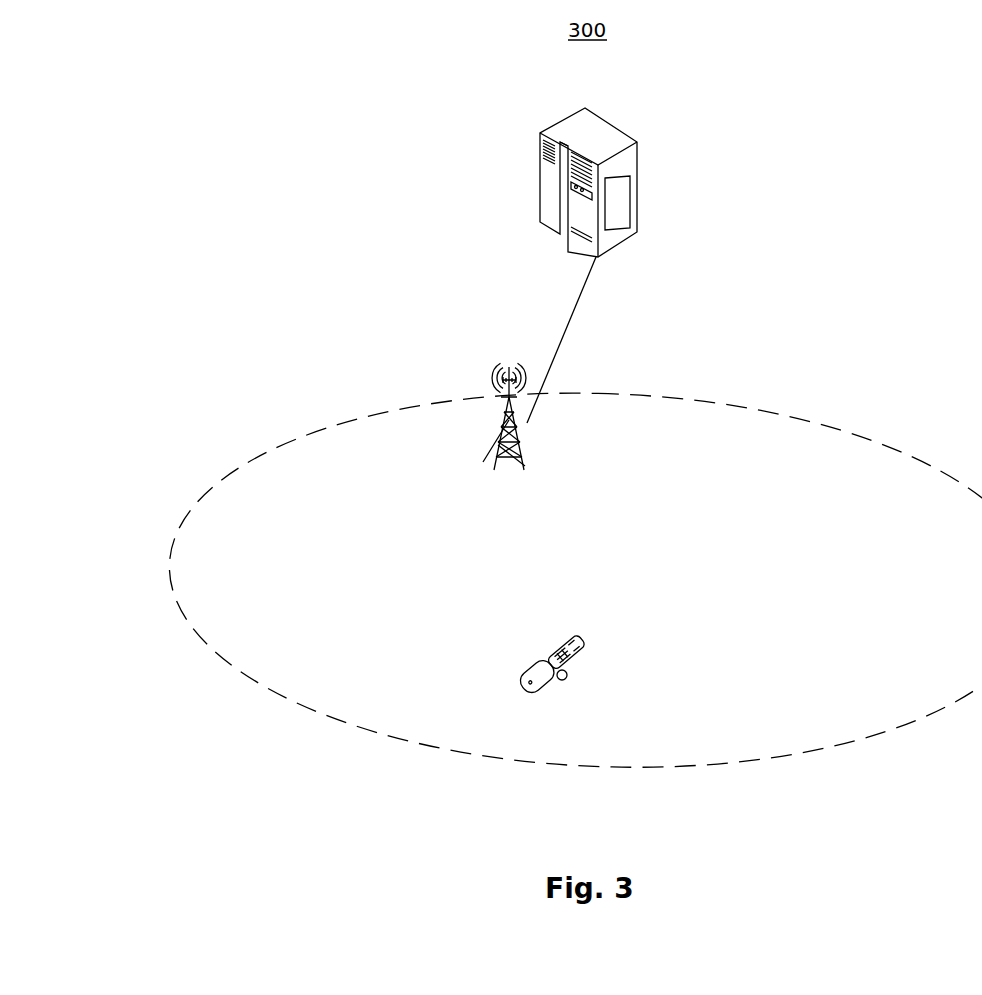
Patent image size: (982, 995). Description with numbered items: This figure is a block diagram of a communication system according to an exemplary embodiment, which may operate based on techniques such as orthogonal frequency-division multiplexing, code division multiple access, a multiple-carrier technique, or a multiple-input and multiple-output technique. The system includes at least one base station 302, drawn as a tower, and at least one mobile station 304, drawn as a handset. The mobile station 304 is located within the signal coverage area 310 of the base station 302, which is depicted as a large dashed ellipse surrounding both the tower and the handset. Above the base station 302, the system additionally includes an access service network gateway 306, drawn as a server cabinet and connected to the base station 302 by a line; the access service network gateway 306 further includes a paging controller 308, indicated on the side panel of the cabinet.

The base station 302 is at (533, 433).
The mobile station 304 is at (580, 655).
The access service network gateway 306 is at (647, 196).
The paging controller 308 is at (618, 198).
The signal coverage area 310 is at (877, 443).